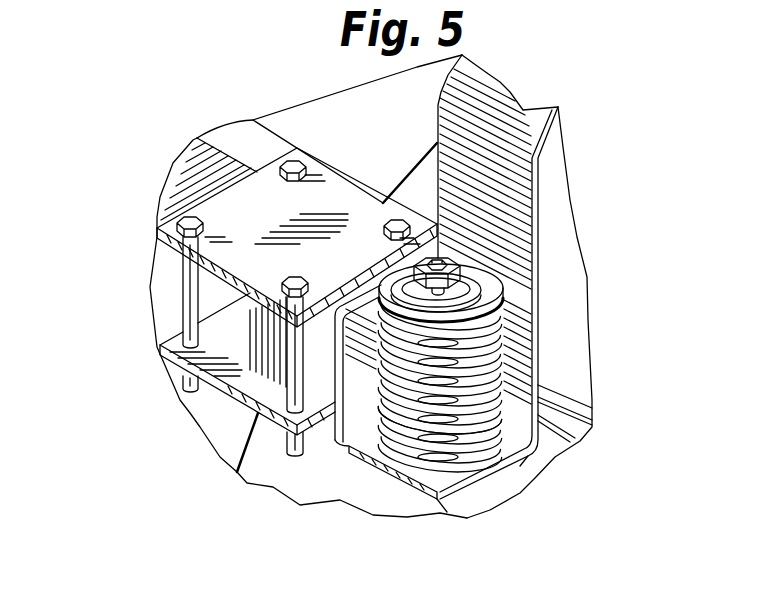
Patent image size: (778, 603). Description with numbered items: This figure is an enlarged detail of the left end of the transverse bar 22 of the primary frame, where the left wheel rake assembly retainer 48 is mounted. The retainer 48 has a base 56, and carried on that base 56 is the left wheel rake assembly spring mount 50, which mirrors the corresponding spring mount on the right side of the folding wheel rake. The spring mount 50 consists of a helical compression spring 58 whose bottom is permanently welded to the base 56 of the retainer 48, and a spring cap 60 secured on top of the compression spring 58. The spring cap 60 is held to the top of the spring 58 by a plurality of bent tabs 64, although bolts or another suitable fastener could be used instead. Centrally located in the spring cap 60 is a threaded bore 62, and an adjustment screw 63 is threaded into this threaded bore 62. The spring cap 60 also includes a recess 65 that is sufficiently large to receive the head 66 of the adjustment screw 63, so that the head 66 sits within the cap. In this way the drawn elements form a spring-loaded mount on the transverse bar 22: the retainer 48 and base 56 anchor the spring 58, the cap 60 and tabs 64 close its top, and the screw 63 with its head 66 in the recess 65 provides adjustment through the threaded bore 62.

The transverse bar 22 is at (210, 302).
The left wheel rake assembly retainer 48 is at (530, 125).
The left wheel rake assembly spring mount 50 is at (540, 448).
The base 56 is at (508, 496).
The helical compression spring 58 is at (518, 412).
The spring cap 60 is at (506, 326).
The threaded bore 62 is at (505, 300).
The adjustment screw 63 is at (480, 275).
The bent tabs 64 is at (503, 358).
The recess 65 is at (470, 258).
The head 66 is at (450, 247).